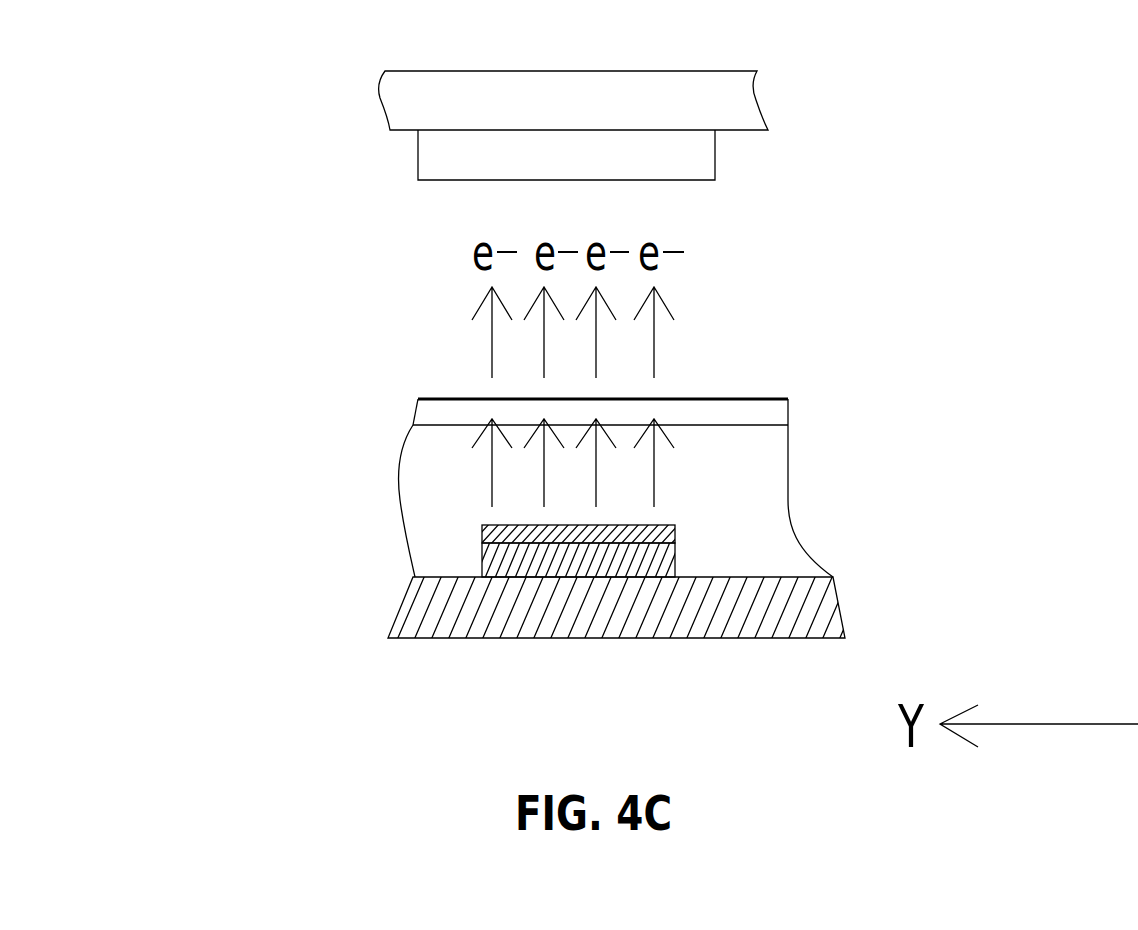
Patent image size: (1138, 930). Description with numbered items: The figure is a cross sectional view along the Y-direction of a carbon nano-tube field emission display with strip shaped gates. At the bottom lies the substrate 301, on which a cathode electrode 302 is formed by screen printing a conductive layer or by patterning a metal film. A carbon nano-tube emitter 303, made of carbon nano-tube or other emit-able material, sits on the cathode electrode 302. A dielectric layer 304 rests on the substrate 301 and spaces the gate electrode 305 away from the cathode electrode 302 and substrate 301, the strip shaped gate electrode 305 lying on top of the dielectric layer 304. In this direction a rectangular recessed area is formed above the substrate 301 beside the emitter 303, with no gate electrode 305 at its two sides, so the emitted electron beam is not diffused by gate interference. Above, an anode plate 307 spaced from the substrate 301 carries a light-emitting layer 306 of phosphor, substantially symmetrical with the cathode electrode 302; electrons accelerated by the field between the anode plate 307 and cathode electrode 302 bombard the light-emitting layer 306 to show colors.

The substrate 301 is at (428, 608).
The cathode electrode 302 is at (650, 563).
The carbon nano-tube emitter 303 is at (677, 525).
The dielectric layer 304 is at (428, 497).
The gate electrode 305 is at (428, 410).
The light-emitting layer 306 is at (498, 153).
The anode plate 307 is at (408, 100).